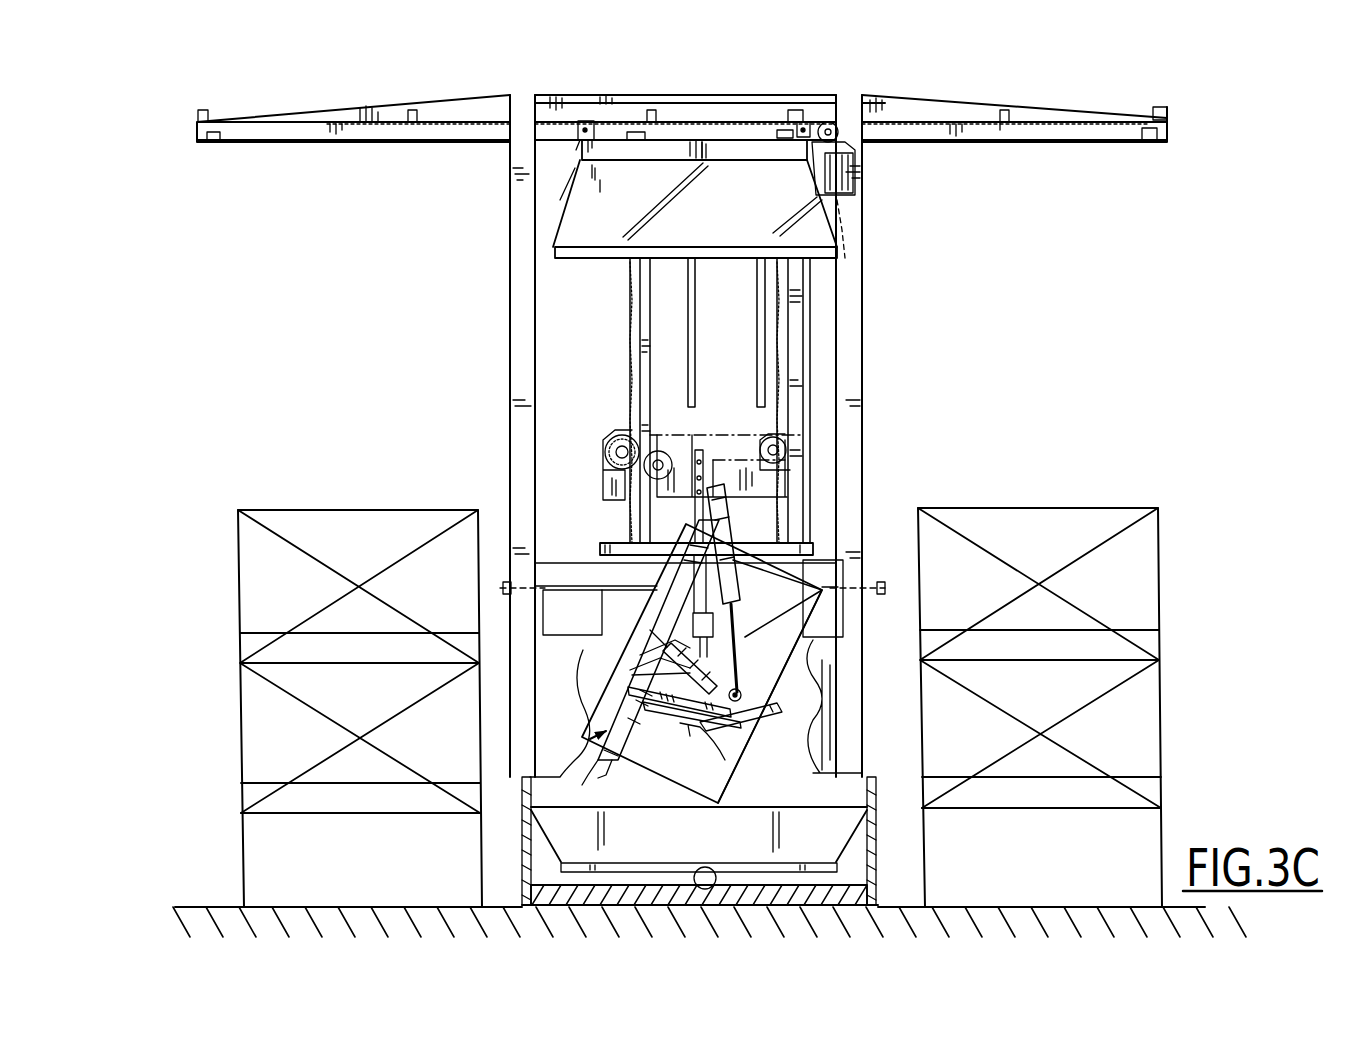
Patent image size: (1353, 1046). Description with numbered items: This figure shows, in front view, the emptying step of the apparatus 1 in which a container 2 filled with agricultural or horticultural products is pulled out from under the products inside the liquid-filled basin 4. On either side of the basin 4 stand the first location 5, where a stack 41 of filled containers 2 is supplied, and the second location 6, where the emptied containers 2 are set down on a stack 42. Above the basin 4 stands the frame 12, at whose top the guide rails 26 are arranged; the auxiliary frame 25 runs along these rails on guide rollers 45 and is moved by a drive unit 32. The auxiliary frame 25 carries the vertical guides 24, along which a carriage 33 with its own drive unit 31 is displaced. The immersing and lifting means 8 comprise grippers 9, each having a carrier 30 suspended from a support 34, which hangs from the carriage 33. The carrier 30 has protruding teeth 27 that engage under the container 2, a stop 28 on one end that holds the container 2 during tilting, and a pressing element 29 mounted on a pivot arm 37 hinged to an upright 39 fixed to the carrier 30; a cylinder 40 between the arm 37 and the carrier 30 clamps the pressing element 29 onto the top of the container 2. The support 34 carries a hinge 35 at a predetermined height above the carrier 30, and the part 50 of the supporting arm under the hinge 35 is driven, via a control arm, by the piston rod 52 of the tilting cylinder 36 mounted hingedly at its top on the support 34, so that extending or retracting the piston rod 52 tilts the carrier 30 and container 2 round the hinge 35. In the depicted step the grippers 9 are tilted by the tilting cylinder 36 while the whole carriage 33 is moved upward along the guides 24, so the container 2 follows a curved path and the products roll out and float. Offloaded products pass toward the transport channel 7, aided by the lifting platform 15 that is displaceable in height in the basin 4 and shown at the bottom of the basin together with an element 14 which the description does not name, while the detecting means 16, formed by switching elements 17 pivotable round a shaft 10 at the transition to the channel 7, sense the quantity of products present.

The apparatus 1 is at (1026, 360).
The container 2 is at (262, 572).
The basin 4 is at (840, 706).
The first location 5 is at (386, 903).
The second location 6 is at (1068, 903).
The transport channel 7 is at (830, 615).
The immersing and lifting means 8 is at (686, 410).
The grippers 9 is at (590, 742).
The shaft 10 is at (582, 585).
The frame 12 is at (866, 318).
The roller 14 is at (708, 872).
The lifting platform 15 is at (786, 868).
The detecting means 16 is at (830, 582).
The switching elements 17 is at (598, 610).
The vertical guides 24 is at (632, 378).
The auxiliary frame 25 is at (612, 222).
The guide rails 26 is at (1010, 148).
The teeth 27 is at (638, 590).
The stop 28 is at (693, 664).
The pressing element 29 is at (775, 718).
The carrier 30 is at (628, 678).
The drive unit 31 is at (603, 464).
The drive unit 32 is at (842, 145).
The carriage 33 is at (720, 448).
The support 34 is at (714, 572).
The hinge 35 is at (718, 652).
The tilting cylinder 36 is at (716, 534).
The arm 37 is at (728, 762).
The upright 39 is at (680, 730).
The cylinder 40 is at (594, 770).
The stack 41 is at (246, 494).
The stack 42 is at (1175, 518).
The guide rollers 45 is at (576, 125).
The part of the supporting arm 50 is at (632, 660).
The piston rod 52 is at (742, 692).